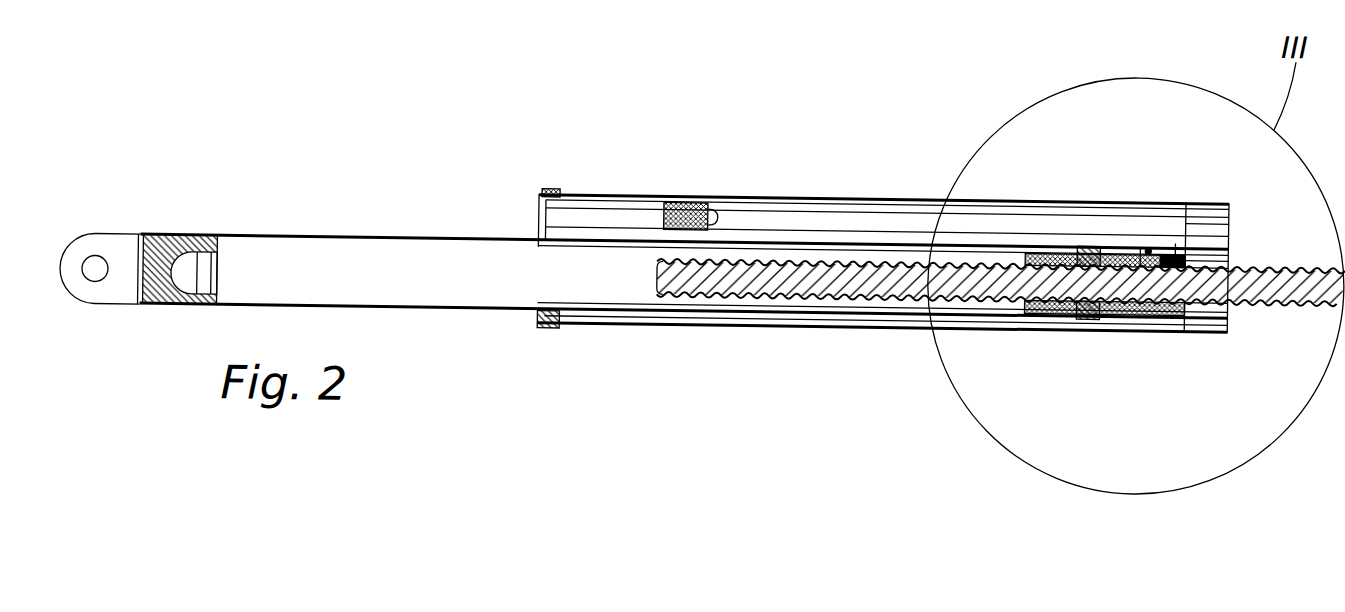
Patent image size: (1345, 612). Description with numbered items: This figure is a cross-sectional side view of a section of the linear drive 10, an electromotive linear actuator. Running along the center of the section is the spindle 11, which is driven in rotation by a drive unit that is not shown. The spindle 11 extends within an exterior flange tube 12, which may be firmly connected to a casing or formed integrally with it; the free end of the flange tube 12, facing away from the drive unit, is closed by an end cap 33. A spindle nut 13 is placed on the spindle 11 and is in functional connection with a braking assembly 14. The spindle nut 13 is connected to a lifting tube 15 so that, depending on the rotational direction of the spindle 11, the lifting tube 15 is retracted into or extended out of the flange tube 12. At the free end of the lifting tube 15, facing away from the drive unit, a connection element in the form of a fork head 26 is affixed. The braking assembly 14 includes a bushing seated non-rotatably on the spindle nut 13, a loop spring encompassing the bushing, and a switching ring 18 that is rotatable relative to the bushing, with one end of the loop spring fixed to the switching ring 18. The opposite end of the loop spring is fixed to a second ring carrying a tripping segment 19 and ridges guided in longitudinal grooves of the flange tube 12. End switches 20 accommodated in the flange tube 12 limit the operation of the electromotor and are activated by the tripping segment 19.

The linear drive 10 is at (833, 181).
The spindle 11 is at (1283, 273).
The exterior flange tube 12 is at (605, 189).
The spindle nut 13 is at (1222, 236).
The braking assembly 14 is at (1148, 223).
The lifting tube 15 is at (345, 234).
The switching ring 18 is at (1175, 224).
The tripping segment 19 is at (1098, 228).
The end switches 20 is at (712, 204).
The fork head 26 is at (120, 249).
The end cap 33 is at (545, 181).